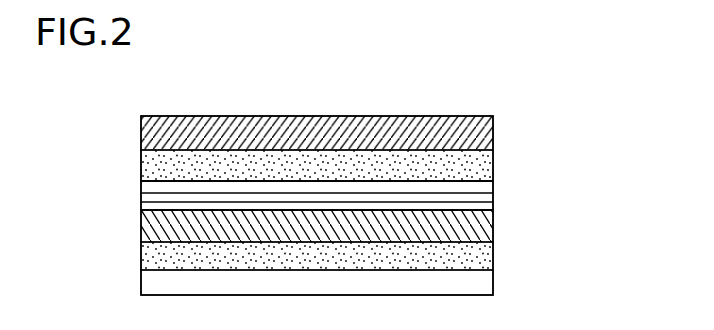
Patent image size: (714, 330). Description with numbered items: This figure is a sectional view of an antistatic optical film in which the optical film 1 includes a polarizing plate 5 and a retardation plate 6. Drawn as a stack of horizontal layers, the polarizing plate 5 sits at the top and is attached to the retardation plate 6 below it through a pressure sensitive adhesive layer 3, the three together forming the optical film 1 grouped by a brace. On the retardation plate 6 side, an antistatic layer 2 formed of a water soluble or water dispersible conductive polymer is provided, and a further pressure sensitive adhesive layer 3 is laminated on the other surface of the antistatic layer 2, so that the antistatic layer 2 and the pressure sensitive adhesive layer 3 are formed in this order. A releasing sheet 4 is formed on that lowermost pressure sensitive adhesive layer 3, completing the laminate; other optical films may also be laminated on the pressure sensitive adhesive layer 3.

The optical film 1 is at (597, 115).
The antistatic layer 2 is at (468, 223).
The pressure sensitive adhesive layer 3 is at (470, 161).
The releasing sheet 4 is at (470, 281).
The polarizing plate 5 is at (470, 128).
The retardation plate 6 is at (470, 190).